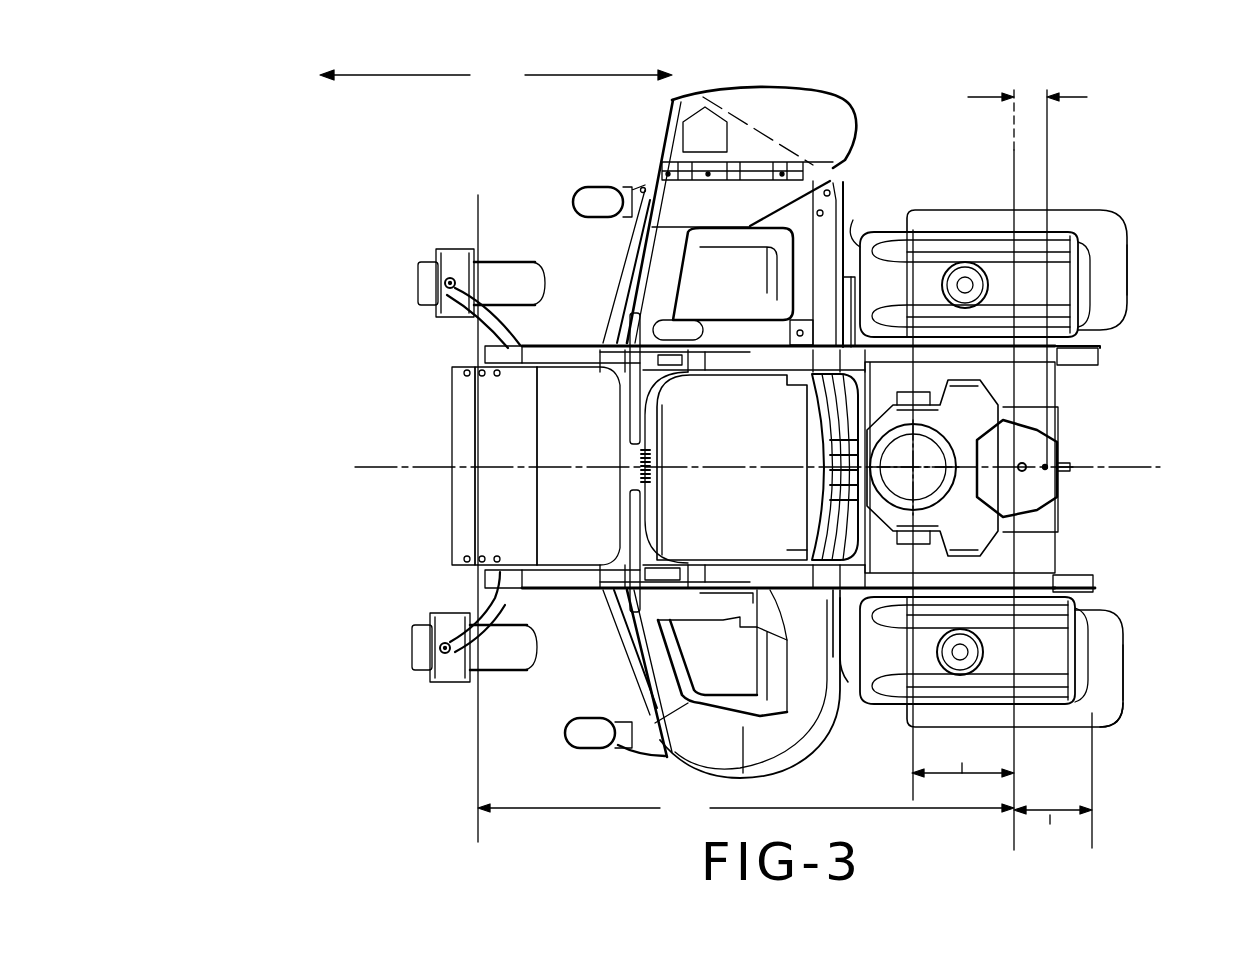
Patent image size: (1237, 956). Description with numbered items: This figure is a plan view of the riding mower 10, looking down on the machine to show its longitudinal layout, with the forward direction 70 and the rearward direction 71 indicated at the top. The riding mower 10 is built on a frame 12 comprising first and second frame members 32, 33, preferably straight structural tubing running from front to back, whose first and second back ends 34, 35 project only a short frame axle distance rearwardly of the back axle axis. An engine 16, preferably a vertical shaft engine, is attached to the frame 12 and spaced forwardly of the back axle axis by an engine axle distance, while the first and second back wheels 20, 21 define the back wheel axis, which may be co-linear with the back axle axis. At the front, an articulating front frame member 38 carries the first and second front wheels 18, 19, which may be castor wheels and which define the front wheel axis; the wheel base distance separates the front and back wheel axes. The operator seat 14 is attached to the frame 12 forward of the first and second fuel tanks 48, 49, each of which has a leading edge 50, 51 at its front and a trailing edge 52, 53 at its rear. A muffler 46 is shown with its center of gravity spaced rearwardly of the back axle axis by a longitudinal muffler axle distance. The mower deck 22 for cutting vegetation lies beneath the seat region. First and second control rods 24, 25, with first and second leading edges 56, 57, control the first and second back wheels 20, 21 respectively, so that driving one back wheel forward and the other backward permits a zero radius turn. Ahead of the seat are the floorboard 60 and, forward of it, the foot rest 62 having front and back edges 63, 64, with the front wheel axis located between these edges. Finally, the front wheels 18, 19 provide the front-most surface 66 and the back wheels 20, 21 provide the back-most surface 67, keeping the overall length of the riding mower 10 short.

The riding mower 10 is at (312, 173).
The frame 12 is at (584, 343).
The operator seat 14 is at (737, 432).
The engine 16 is at (977, 532).
The first front wheel 18 is at (507, 270).
The second front wheel 19 is at (497, 648).
The first back wheel 20 is at (923, 217).
The second back wheel 21 is at (1047, 720).
The mower deck 22 is at (663, 180).
The first control rod 24 is at (627, 320).
The second control rod 25 is at (628, 605).
The first frame member 32 is at (1060, 358).
The second frame member 33 is at (1073, 570).
The first back end 34 is at (1098, 347).
The second back end 35 is at (1095, 588).
The articulating front frame member 38 is at (487, 612).
The muffler 46 is at (1047, 490).
The first fuel tank 48 is at (1053, 285).
The second fuel tank 49 is at (1070, 650).
The first leading edge 50 is at (855, 238).
The second leading edge 51 is at (843, 682).
The first trailing edge 52 is at (1103, 203).
The second trailing edge 53 is at (1090, 713).
The first leading edge 56 is at (630, 420).
The second leading edge 57 is at (632, 517).
The floorboard 60 is at (560, 396).
The foot rest 62 is at (490, 431).
The front edge 63 is at (448, 391).
The back edge 64 is at (535, 444).
The front-most surface 66 is at (400, 644).
The back-most surface 67 is at (1123, 697).
The direction 70 is at (438, 75).
The direction 71 is at (582, 75).